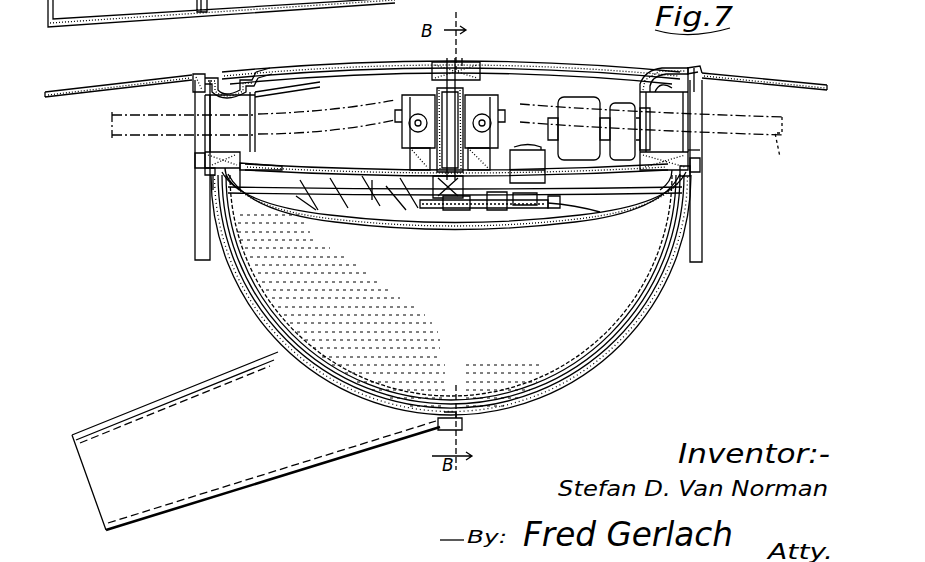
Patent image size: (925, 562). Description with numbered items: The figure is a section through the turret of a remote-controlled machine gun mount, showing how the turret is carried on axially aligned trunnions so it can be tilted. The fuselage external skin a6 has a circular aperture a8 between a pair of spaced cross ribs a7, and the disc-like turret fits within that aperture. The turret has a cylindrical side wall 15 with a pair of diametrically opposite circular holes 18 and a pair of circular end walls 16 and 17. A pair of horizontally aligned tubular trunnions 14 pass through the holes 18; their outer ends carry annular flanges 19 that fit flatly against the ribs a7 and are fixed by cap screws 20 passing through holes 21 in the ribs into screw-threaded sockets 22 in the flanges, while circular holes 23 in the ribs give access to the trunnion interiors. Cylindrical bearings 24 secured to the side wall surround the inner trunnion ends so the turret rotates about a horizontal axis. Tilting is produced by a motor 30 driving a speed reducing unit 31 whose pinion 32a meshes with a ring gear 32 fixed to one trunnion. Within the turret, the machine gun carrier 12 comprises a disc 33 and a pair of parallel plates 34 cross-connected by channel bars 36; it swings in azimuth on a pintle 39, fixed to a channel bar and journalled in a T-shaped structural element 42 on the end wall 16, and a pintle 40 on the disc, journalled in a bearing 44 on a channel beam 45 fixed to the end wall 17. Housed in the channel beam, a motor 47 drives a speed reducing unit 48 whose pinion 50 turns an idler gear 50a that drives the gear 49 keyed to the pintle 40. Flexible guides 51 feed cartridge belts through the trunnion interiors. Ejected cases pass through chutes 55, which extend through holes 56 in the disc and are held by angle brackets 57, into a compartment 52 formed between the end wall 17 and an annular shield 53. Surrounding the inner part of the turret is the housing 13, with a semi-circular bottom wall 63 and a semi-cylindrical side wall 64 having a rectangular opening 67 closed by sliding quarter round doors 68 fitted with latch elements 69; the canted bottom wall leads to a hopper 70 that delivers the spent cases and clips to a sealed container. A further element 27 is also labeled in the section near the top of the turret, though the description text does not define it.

The machine gun carrier 12 is at (394, 146).
The housing 13 is at (647, 334).
The tubular trunnions 14 is at (300, 74).
The cylindrical side wall 15 is at (207, 186).
The circular end wall 16 is at (658, 80).
The circular end wall 17 is at (555, 196).
The circular holes 18 is at (260, 78).
The annular flanges 19 is at (698, 72).
The cap screws 20 is at (196, 76).
The holes 21 is at (206, 170).
The screw-threaded sockets 22 is at (668, 185).
The circular holes 23 is at (205, 99).
The cylindrical bearings 24 is at (695, 62).
The deck plate 27 is at (384, 67).
The motor 30 is at (580, 98).
The speed reducing unit 31 is at (622, 104).
The ring gear 32 is at (672, 70).
The pinion 32a is at (650, 128).
The disc 33 is at (352, 190).
The plates 34 is at (466, 102).
The channel bars 36 is at (470, 102).
The pintle 39 is at (464, 66).
The pintle 40 is at (462, 212).
The T-shaped structural element 42 is at (482, 70).
The bearing 44 is at (496, 212).
The channel beam 45 is at (304, 200).
The motor 47 is at (526, 148).
The speed reducing unit 48 is at (536, 208).
The gear 49 is at (435, 204).
The pinion 50 is at (578, 206).
The idler gear 50a is at (538, 210).
The flexible guides 51 is at (789, 142).
The compartment 52 is at (622, 214).
The annular shield 53 is at (312, 168).
The chutes 55 is at (492, 158).
The holes 56 is at (408, 158).
The angle brackets 57 is at (374, 186).
The semi-circular bottom wall 63 is at (415, 310).
The semi-cylindrical side wall 64 is at (618, 356).
The rectangular opening 67 is at (586, 380).
The quarter round doors 68 is at (338, 390).
The latch elements 69 is at (442, 416).
The hopper 70 is at (302, 476).
The external skin a6 is at (100, 90).
The cross ribs a7 is at (702, 232).
The circular aperture a8 is at (225, 76).